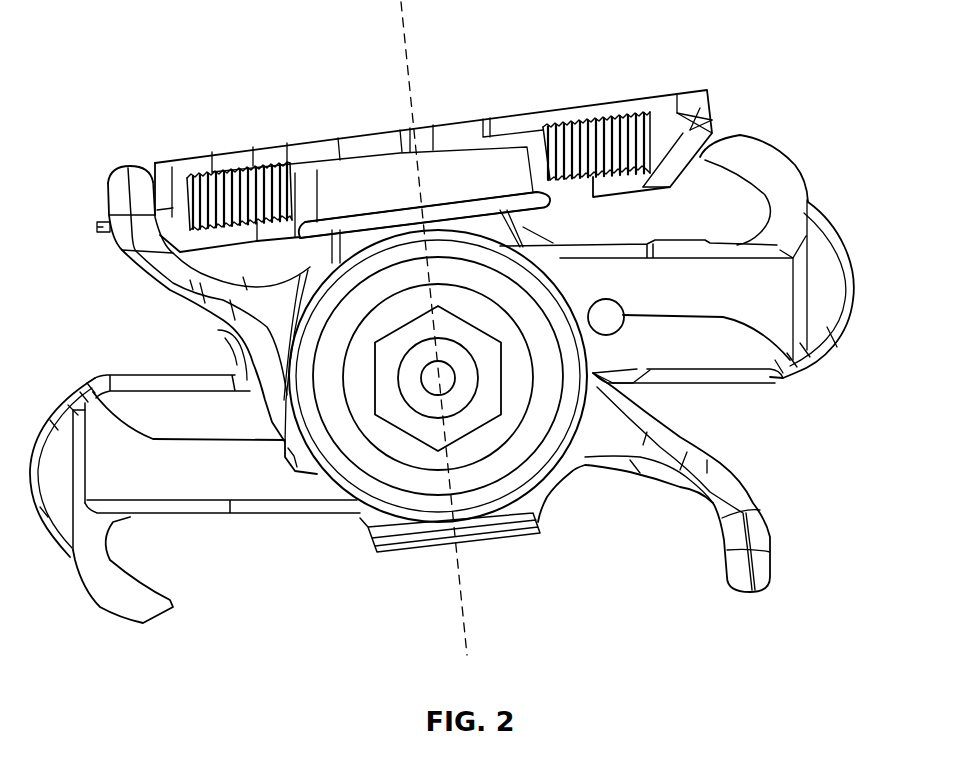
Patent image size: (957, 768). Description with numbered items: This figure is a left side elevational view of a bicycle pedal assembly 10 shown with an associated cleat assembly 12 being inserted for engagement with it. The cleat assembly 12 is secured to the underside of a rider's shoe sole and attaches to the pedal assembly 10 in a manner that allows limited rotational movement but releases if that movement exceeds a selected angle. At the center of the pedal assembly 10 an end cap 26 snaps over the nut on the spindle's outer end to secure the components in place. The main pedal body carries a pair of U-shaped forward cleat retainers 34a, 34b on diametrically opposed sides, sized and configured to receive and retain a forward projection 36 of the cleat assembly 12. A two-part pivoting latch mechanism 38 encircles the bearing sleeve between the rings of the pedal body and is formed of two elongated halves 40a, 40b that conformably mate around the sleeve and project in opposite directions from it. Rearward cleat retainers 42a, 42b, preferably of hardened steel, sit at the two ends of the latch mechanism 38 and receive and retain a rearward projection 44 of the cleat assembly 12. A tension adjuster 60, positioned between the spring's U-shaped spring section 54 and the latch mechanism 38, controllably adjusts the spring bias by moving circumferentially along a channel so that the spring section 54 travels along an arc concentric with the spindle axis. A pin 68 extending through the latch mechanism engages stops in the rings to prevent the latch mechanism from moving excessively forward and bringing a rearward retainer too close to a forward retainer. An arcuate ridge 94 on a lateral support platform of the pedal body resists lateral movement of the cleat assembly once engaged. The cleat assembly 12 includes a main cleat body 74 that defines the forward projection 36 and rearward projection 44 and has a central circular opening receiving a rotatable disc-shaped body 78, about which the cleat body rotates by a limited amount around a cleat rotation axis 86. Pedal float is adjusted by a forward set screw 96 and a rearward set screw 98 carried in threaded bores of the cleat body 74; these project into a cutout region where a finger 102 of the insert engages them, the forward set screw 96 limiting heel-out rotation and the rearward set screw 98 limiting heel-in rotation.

The pedal assembly 10 is at (103, 328).
The cleat assembly 12 is at (245, 113).
The end cap 26 is at (428, 505).
The forward cleat retainer 34a is at (115, 180).
The forward cleat retainer 34b is at (770, 535).
The forward projection 36 is at (97, 228).
The pivoting latch mechanism 38 is at (827, 343).
The latch mechanism half 40a is at (787, 287).
The latch mechanism half 40b is at (120, 477).
The rearward cleat retainer 42a is at (778, 170).
The rearward cleat retainer 42b is at (127, 607).
The rearward projection 44 is at (693, 120).
The U-shaped spring section 54 is at (225, 350).
The tension adjuster 60 is at (297, 268).
The pin 68 is at (607, 320).
The main cleat body 74 is at (660, 103).
The disc-shaped body 78 is at (463, 128).
The cleat rotation axis 86 is at (418, 32).
The arcuate ridge 94 is at (537, 240).
The forward set screw 96 is at (205, 178).
The rearward set screw 98 is at (583, 130).
The finger 102 is at (402, 137).